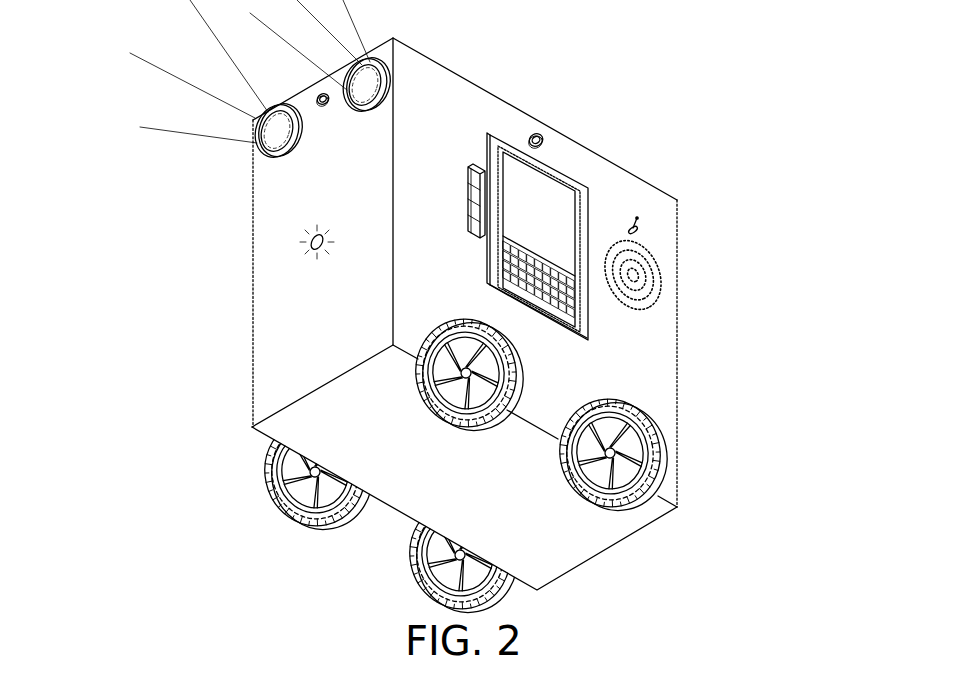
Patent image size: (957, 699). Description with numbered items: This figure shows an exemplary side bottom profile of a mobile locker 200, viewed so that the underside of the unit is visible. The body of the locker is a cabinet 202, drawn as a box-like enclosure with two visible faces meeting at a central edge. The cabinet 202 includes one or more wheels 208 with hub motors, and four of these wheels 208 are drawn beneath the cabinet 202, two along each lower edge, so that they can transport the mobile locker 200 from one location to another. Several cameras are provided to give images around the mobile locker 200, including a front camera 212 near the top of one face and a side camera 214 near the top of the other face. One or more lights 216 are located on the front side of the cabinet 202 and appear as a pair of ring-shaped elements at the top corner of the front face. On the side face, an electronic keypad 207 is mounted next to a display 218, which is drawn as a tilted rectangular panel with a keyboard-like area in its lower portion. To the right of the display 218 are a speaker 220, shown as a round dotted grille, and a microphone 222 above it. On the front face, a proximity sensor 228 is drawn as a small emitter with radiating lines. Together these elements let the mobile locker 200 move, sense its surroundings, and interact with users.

The mobile locker 200 is at (213, 535).
The cabinet 202 is at (677, 410).
The electronic keypad 207 is at (468, 203).
The wheels 208 is at (517, 392).
The front camera 212 is at (320, 108).
The side camera 214 is at (545, 144).
The lights 216 is at (391, 82).
The display 218 is at (588, 207).
The speaker 220 is at (662, 292).
The microphone 222 is at (640, 233).
The proximity sensor 228 is at (307, 240).